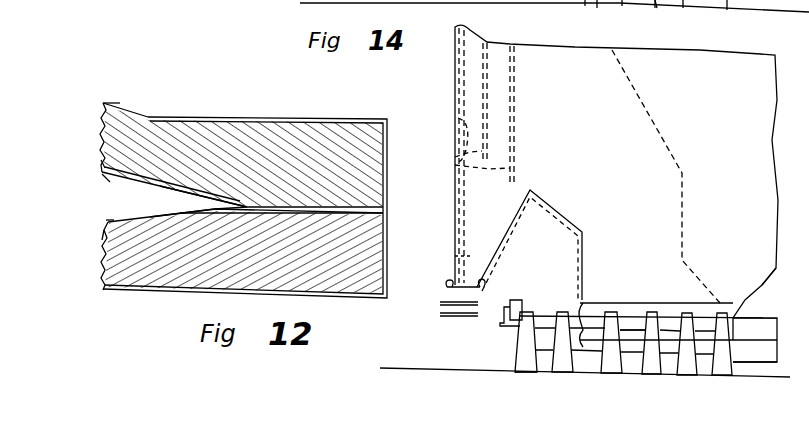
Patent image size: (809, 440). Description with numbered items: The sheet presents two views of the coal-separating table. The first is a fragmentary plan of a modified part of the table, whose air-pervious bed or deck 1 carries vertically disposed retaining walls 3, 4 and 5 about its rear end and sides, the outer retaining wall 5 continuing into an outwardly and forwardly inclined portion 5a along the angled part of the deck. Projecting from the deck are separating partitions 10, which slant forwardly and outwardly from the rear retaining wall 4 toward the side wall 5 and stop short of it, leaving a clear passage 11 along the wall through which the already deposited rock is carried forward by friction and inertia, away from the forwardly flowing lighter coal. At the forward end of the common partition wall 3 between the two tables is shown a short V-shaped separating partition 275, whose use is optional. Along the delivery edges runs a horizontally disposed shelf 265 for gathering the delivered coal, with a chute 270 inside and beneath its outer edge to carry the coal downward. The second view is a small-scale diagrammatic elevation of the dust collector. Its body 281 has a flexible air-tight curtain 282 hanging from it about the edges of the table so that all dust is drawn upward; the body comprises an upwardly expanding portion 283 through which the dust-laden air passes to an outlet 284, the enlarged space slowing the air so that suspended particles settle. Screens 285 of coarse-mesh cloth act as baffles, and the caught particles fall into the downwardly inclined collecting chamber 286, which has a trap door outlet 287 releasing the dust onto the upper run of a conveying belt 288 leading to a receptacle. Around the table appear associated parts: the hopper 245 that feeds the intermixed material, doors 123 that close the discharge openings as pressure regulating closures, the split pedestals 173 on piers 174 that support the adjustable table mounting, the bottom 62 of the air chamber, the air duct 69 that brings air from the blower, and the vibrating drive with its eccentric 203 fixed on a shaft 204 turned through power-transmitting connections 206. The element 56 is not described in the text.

In FIG. 12, the bed or deck 1 is at (349, 163).
In FIG. 12, the retaining wall 3 is at (363, 211).
In FIG. 12, the retaining wall 4 is at (387, 241).
In FIG. 12, the retaining wall 5 is at (326, 100).
In FIG. 12, the inclined portion of retaining wall 5a is at (116, 102).
In FIG. 12, the separating partitions 10 is at (362, 186).
In FIG. 12, the clear passage 11 is at (167, 123).
In FIG. 12, the shelf 265 is at (101, 165).
In FIG. 12, the chute 270 is at (103, 177).
In FIG. 12, the V-shaped separating partition 275 is at (168, 196).
In FIG. 14, the shaft 204 is at (585, 5).
In FIG. 14, the eccentric 203 is at (622, 5).
In FIG. 14, the power-transmitting connections 206 is at (656, 8).
In FIG. 14, the outlet 284 is at (455, 106).
In FIG. 14, the screens 285 is at (461, 157).
In FIG. 14, the collecting chamber 286 is at (456, 256).
In FIG. 14, the trap door outlet 287 is at (455, 289).
In FIG. 14, the conveying belt 288 is at (445, 305).
In FIG. 14, the upwardly expanding portion 283 is at (567, 200).
In FIG. 14, the body of the dust collector 281 is at (596, 262).
In FIG. 14, the curtain 282 is at (720, 326).
In FIG. 14, the hopper 245 is at (760, 290).
In FIG. 14, the bracket 56 is at (548, 316).
In FIG. 14, the doors 123 is at (503, 320).
In FIG. 14, the split pedestals 173 is at (520, 324).
In FIG. 14, the piers 174 is at (522, 358).
In FIG. 14, the bottom 62 is at (637, 345).
In FIG. 14, the air duct 69 is at (752, 352).